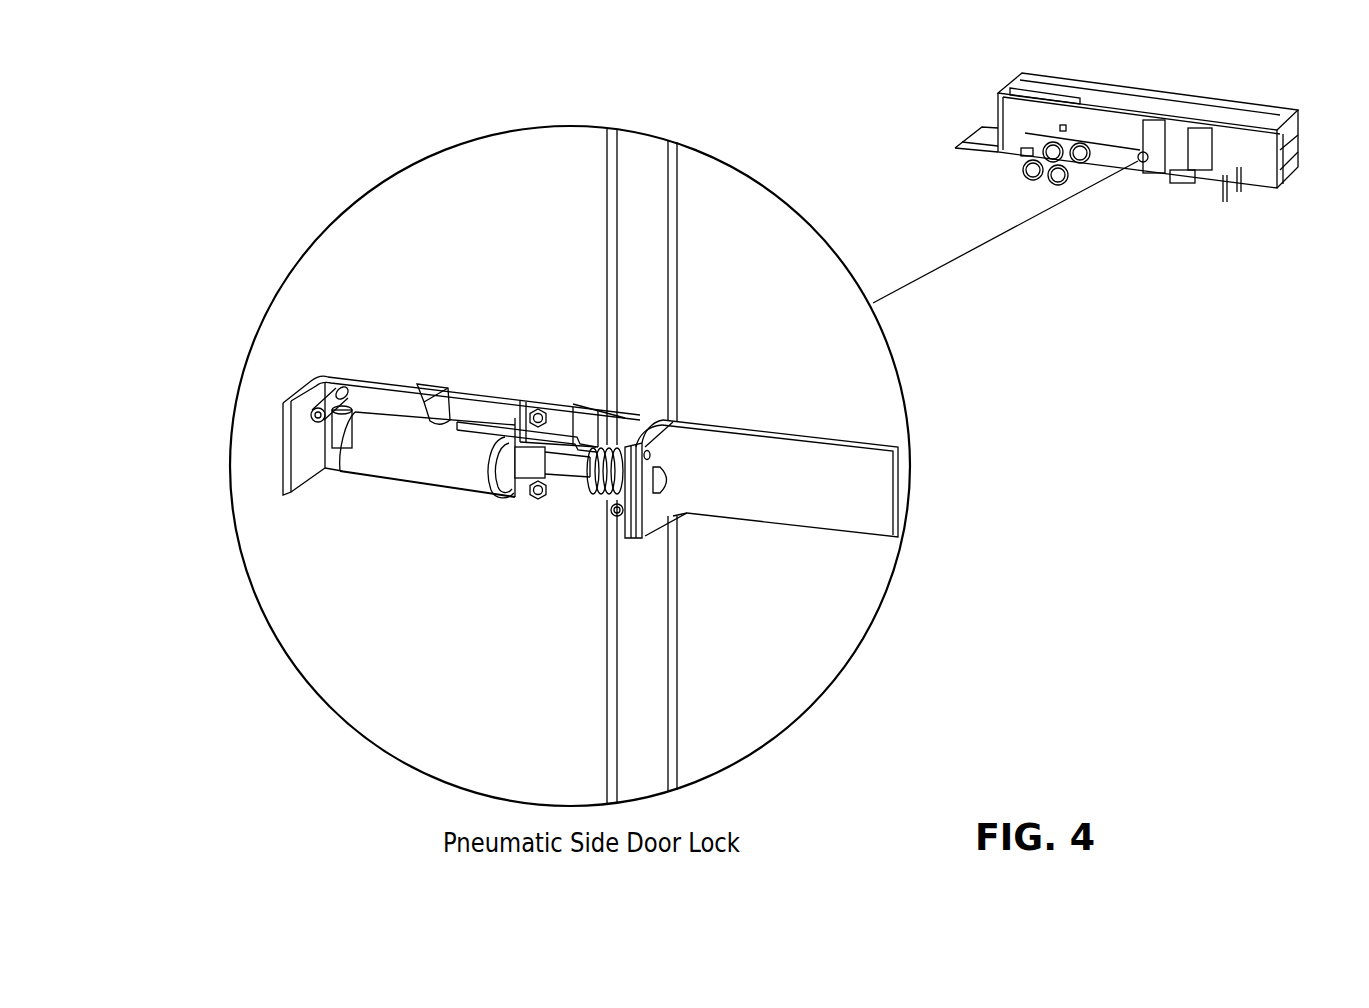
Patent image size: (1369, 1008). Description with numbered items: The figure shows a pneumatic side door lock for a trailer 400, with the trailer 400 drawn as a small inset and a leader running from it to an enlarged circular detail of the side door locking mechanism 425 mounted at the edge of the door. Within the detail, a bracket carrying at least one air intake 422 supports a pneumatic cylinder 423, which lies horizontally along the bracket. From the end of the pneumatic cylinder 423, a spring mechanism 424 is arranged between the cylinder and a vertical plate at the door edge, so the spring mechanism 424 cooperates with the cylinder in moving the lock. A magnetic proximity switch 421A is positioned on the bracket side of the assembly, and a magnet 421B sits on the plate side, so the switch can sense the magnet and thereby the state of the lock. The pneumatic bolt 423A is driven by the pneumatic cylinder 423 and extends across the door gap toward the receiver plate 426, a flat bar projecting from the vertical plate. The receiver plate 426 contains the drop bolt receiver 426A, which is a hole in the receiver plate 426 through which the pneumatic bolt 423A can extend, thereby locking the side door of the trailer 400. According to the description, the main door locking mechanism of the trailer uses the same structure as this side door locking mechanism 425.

The trailer 400 is at (1296, 206).
The magnetic proximity switch 421A is at (608, 447).
The magnet 421B is at (650, 455).
The air intake 422 is at (409, 384).
The pneumatic cylinder 423 is at (428, 452).
The pneumatic bolt 423A is at (662, 480).
The spring mechanism 424 is at (592, 487).
The side door locking mechanism 425 is at (784, 149).
The receiver plate 426 is at (758, 470).
The drop bolt receiver 426A is at (671, 514).